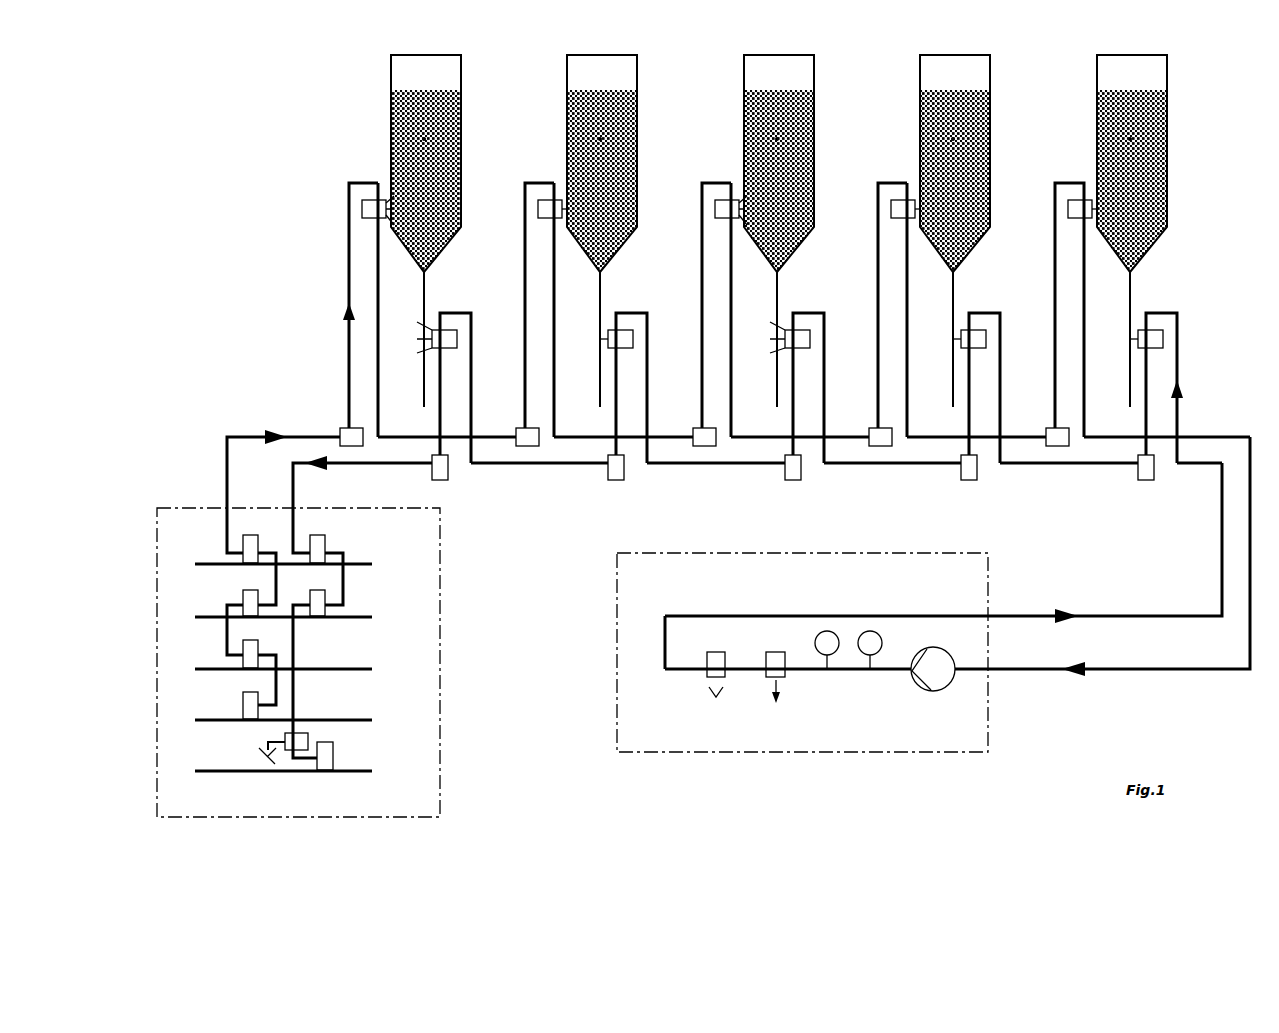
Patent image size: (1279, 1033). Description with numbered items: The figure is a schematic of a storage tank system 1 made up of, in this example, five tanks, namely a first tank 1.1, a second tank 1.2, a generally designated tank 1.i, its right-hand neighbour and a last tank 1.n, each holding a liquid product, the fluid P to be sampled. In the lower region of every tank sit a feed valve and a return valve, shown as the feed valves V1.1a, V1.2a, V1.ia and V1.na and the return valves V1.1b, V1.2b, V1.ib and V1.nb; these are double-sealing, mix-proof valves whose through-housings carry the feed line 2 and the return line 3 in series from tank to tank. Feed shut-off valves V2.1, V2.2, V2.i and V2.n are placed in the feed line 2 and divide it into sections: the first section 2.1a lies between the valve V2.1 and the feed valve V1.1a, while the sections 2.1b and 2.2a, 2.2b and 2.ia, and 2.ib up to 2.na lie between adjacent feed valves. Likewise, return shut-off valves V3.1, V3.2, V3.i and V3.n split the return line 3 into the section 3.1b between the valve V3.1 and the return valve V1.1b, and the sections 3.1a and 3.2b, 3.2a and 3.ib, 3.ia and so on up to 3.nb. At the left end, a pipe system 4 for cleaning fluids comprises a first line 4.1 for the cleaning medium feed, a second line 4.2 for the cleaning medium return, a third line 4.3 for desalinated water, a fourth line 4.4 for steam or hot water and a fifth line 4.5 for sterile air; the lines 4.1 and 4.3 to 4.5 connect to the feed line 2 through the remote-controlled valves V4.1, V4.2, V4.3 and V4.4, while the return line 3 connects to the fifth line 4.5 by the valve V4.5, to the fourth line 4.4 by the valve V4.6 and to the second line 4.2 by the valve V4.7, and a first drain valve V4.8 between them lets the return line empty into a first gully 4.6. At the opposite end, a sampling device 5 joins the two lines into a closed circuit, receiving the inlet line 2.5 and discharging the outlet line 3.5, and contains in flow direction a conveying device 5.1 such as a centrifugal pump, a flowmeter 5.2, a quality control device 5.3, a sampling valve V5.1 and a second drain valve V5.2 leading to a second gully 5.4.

The storage tank system 1 is at (848, 62).
The first tank 1.1 is at (426, 163).
The second tank 1.2 is at (612, 88).
The tank i 1.i is at (789, 88).
The last tank 1.n is at (1118, 88).
The fluid to be sampled P is at (424, 129).
The feed line 2 is at (237, 437).
The return line 3 is at (298, 506).
The pipe system 4 is at (463, 588).
The sampling device 5 is at (802, 755).
The first section of the feed line on tank 1.1 2.1a is at (349, 272).
The second section of the feed line on tank 1.1 2.1b is at (378, 272).
The first section of the feed line on tank 1.2 2.2a is at (525, 272).
The second section of the feed line on tank 1.2 2.2b is at (554, 272).
The first section of the feed line on tank 1.i 2.ia is at (702, 272).
The second section of the feed line on tank 1.i 2.ib is at (731, 272).
The first section of the feed line on tank 1.n 2.na is at (1055, 272).
The first section of the return line on tank 1.1 3.1a is at (471, 418).
The second section of the return line on tank 1.1 3.1b is at (424, 405).
The first section of the return line on tank 1.2 3.2a is at (647, 418).
The second section of the return line on tank 1.2 3.2b is at (600, 405).
The first section of the return line on tank 1.i 3.ia is at (824, 418).
The second section of the return line on tank 1.i 3.ib is at (777, 405).
The second section of the return line on tank 1.n 3.nb is at (1130, 405).
The first feed valve V1.1a is at (370, 207).
The first return valve V1.1b is at (446, 338).
The second feed valve V1.2a is at (546, 207).
The second return valve V1.2b is at (622, 338).
The feed valve of tank 1.i V1.ia is at (723, 207).
The return valve of tank 1.i V1.ib is at (799, 338).
The feed valve of tank 1.n V1.na is at (1076, 207).
The return valve of tank 1.n V1.nb is at (1152, 338).
The first feed shut-off valve V2.1 is at (353, 440).
The feed shut-off valve V2.2 is at (529, 440).
The feed shut-off valve V2.i is at (706, 440).
The feed shut-off valve V2.n is at (1059, 440).
The first return shut-off valve V3.1 is at (440, 470).
The return shut-off valve V3.2 is at (616, 470).
The return shut-off valve V3.i is at (793, 470).
The return shut-off valve V3.n is at (1146, 470).
The first line 4.1 is at (286, 716).
The second line 4.2 is at (283, 771).
The third line 4.3 is at (286, 669).
The fourth line 4.4 is at (294, 617).
The fifth line 4.5 is at (282, 564).
The first gully 4.6 is at (268, 766).
The remote-controlled valve V4.1 is at (250, 706).
The remote-controlled valve V4.2 is at (250, 652).
The remote-controlled valve V4.3 is at (250, 600).
The remote-controlled valve V4.4 is at (250, 545).
The fifth valve V4.5 is at (318, 545).
The sixth valve V4.6 is at (318, 607).
The seventh valve V4.7 is at (325, 750).
The first drain valve V4.8 is at (298, 742).
The inlet line 2.5 is at (1036, 672).
The outlet line 3.5 is at (1036, 620).
The conveying device 5.1 is at (932, 686).
The flowmeter 5.2 is at (870, 631).
The quality control device 5.3 is at (827, 631).
The second gully 5.4 is at (716, 697).
The sampling valve V5.1 is at (776, 660).
The second drain valve V5.2 is at (716, 660).